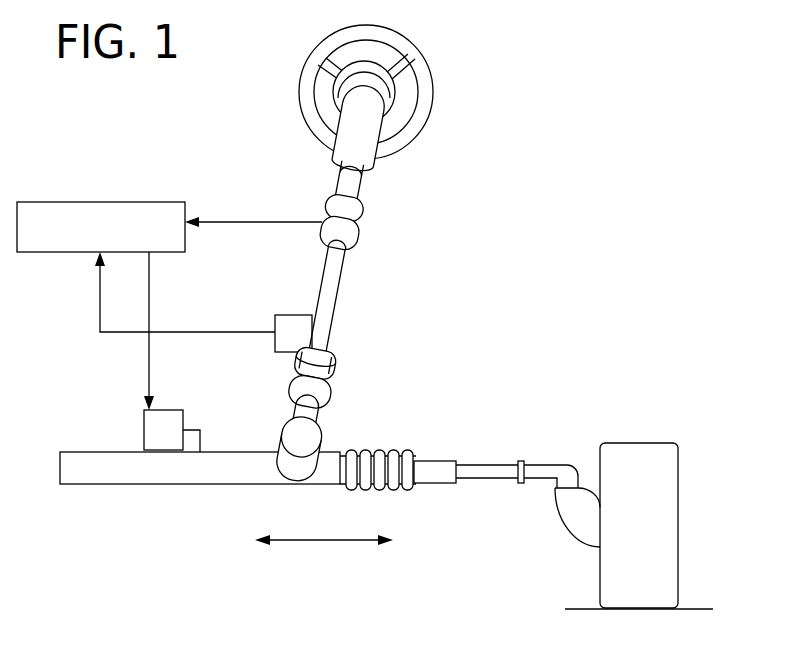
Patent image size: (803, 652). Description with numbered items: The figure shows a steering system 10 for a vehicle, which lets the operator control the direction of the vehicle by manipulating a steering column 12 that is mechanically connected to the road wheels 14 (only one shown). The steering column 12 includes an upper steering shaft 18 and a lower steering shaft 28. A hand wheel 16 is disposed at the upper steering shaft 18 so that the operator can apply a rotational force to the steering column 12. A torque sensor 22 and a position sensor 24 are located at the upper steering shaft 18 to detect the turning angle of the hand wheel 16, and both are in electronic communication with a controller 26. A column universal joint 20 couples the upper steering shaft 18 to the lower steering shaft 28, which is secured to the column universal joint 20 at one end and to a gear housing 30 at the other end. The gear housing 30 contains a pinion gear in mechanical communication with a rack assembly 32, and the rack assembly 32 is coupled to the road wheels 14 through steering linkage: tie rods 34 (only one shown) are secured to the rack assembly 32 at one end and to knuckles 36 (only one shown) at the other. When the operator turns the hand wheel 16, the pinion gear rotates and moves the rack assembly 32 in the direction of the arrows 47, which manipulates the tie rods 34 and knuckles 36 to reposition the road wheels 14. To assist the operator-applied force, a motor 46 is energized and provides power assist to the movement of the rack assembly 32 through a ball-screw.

The steering system 10 is at (582, 260).
The steering column 12 is at (377, 121).
The road wheels 14 is at (645, 443).
The hand wheel 16 is at (425, 88).
The upper steering shaft 18 is at (353, 186).
The column universal joint 20 is at (319, 363).
The torque sensor 22 is at (361, 216).
The position sensor 24 is at (297, 313).
The controller 26 is at (85, 202).
The lower steering shaft 28 is at (313, 417).
The gear housing 30 is at (284, 438).
The rack assembly 32 is at (182, 489).
The tie rods 34 is at (487, 473).
The knuckles 36 is at (567, 511).
The motor 46 is at (165, 410).
The arrows 47 is at (333, 541).